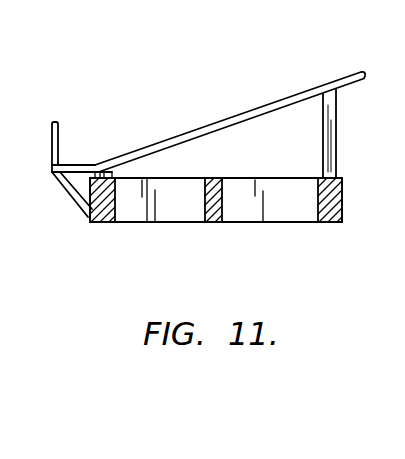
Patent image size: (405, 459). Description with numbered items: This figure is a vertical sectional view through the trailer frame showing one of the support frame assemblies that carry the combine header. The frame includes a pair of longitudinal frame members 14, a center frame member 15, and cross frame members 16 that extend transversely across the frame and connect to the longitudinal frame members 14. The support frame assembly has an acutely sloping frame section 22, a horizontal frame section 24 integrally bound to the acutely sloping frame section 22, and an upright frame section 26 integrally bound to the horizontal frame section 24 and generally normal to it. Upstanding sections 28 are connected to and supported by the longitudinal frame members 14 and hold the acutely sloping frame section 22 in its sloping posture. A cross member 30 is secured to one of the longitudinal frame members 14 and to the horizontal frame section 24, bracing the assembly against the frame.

The longitudinal frame member 14 is at (102, 222).
The center frame member 15 is at (218, 222).
The cross frame member 16 is at (277, 208).
The acutely sloping frame section 22 is at (243, 108).
The horizontal frame section 24 is at (80, 165).
The upright frame section 26 is at (63, 130).
The upstanding section 28 is at (337, 131).
The cross member 30 is at (70, 194).